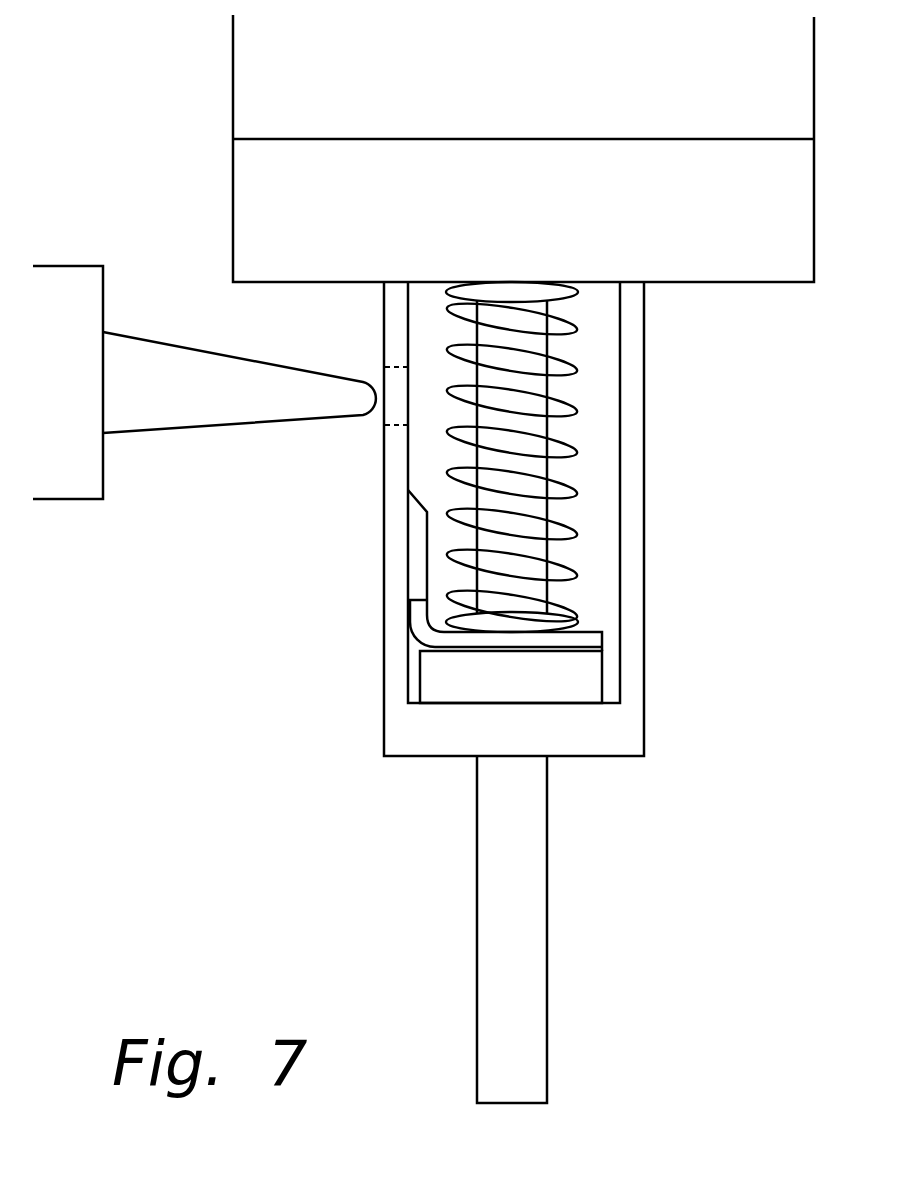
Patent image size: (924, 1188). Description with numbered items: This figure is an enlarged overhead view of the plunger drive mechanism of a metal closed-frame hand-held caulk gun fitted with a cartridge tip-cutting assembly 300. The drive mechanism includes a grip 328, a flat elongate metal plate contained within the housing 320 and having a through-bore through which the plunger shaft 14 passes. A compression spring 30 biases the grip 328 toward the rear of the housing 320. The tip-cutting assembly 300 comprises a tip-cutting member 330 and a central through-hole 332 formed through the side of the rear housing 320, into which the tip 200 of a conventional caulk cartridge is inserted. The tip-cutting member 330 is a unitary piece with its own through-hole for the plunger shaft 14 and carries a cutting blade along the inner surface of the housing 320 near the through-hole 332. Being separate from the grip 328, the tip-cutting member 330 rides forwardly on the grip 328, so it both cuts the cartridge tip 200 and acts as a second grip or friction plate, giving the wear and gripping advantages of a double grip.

The plunger shaft 14 is at (477, 977).
The compression spring 30 is at (573, 453).
The tip 200 is at (333, 418).
The cartridge tip-cutting assembly 300 is at (296, 614).
The housing 320 is at (645, 603).
The grip 328 is at (420, 675).
The tip-cutting member 330 is at (407, 551).
The central through-hole 332 is at (383, 367).